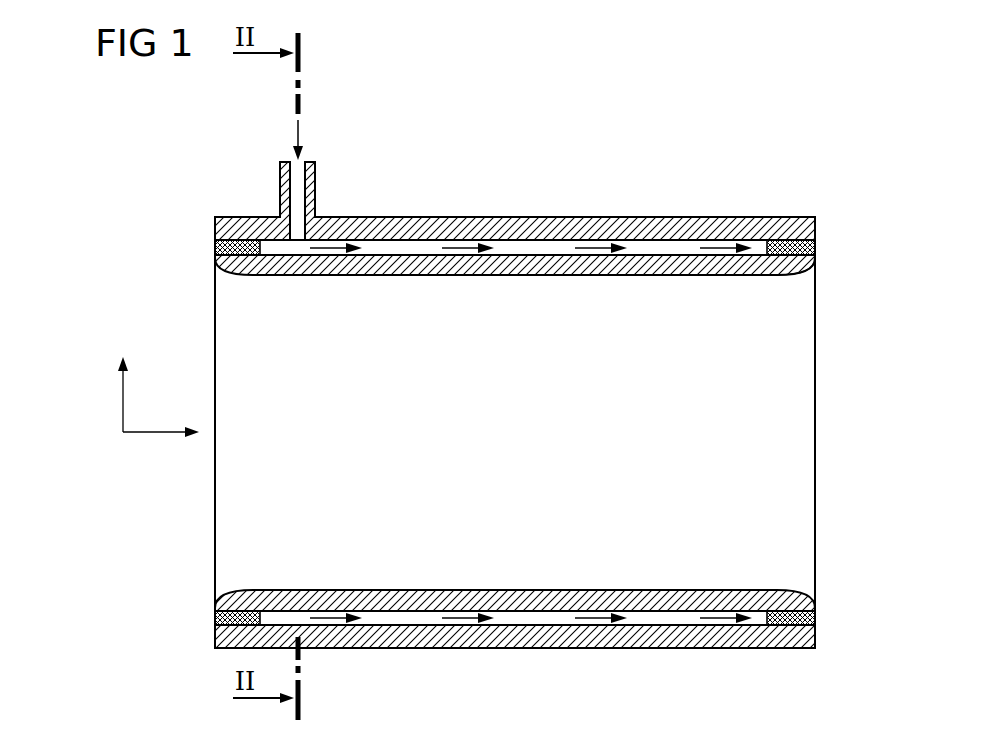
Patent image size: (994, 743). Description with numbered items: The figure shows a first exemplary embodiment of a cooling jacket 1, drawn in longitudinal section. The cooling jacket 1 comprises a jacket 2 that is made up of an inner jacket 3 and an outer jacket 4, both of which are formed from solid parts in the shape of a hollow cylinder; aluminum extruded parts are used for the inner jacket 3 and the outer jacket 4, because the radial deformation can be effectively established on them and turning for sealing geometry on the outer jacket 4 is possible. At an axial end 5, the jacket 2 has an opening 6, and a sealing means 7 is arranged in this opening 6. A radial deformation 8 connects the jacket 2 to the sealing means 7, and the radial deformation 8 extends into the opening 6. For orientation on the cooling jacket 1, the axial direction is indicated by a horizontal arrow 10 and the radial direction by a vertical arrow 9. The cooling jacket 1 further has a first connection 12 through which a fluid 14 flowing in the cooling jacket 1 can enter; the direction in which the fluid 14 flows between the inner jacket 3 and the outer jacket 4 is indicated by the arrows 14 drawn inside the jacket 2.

The cooling jacket 1 is at (742, 82).
The jacket 2 is at (190, 201).
The inner jacket 3 is at (290, 276).
The outer jacket 4 is at (246, 230).
The axial end 5 is at (808, 202).
The opening 6 is at (832, 250).
The sealing means 7 is at (773, 246).
The radial deformation 8 is at (795, 276).
The vertical arrow 9 is at (123, 402).
The horizontal arrow 10 is at (156, 434).
The first connection 12 is at (310, 188).
The fluid 14 is at (300, 132).